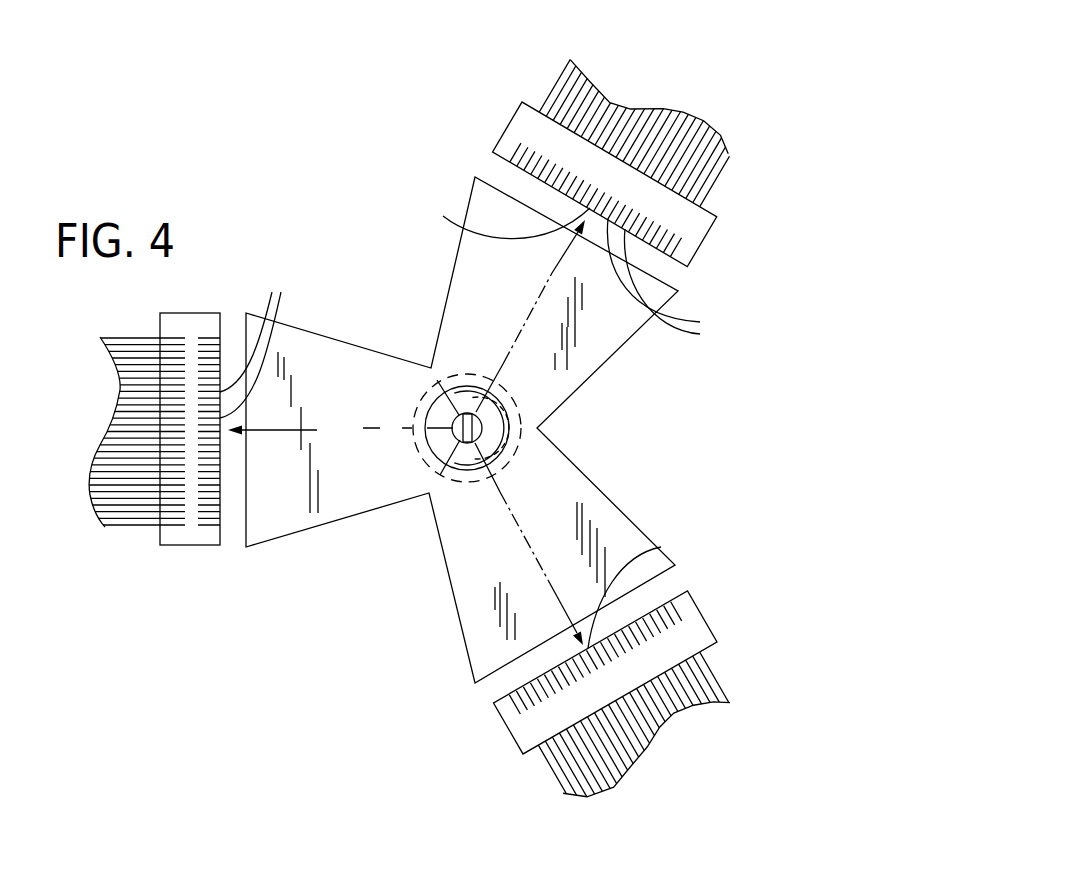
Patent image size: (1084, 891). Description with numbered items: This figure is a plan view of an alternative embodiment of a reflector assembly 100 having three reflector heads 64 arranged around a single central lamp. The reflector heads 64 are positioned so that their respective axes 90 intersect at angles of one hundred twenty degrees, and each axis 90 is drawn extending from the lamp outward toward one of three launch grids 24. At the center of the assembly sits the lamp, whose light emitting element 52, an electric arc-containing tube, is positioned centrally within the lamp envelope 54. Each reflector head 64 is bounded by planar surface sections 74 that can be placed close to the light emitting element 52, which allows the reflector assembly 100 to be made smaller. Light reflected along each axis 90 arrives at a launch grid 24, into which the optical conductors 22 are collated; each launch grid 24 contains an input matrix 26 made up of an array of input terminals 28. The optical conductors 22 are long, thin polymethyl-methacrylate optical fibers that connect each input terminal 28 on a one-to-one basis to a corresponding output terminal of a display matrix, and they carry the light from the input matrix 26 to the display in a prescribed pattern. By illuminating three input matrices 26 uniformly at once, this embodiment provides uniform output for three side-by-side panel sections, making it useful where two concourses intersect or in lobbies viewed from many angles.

The optical backplane assembly 100 is at (319, 214).
The optical conductors 22 is at (128, 529).
The launch grid 24 is at (182, 546).
The input matrix 26 is at (705, 545).
The input terminals 28 is at (483, 318).
The light emitting element 52 is at (465, 433).
The lamp envelope 54 is at (488, 452).
The reflector heads 64 is at (349, 341).
The planar surface sections 74 is at (389, 354).
The axes 90 is at (376, 430).